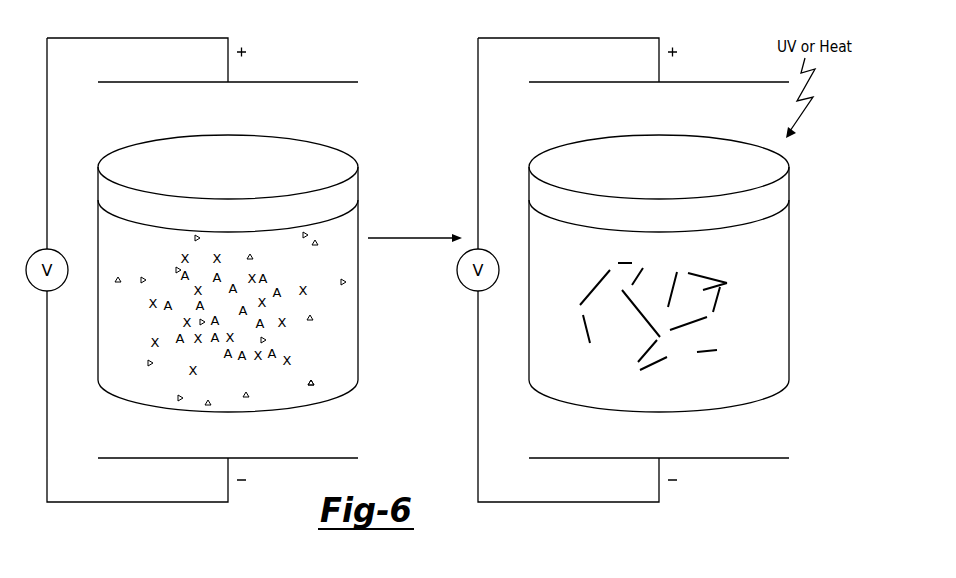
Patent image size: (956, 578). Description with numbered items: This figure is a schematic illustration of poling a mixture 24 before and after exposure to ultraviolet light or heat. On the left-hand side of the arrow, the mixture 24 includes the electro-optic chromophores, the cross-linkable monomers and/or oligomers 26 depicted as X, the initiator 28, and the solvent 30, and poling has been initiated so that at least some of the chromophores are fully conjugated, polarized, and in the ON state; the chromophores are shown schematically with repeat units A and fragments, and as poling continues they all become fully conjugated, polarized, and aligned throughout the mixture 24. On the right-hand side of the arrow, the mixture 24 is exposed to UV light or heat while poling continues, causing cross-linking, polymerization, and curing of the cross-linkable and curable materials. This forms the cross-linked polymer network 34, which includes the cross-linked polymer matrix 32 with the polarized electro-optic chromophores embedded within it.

The mixture 24 is at (112, 263).
The cross-linkable monomer(s) and/or oligomer(s) 26 is at (290, 320).
The initiator 28 is at (317, 383).
The solvent 30 is at (345, 365).
The cross-linked polymer matrix 32 is at (728, 333).
The cross-linked polymer network 34 is at (772, 363).